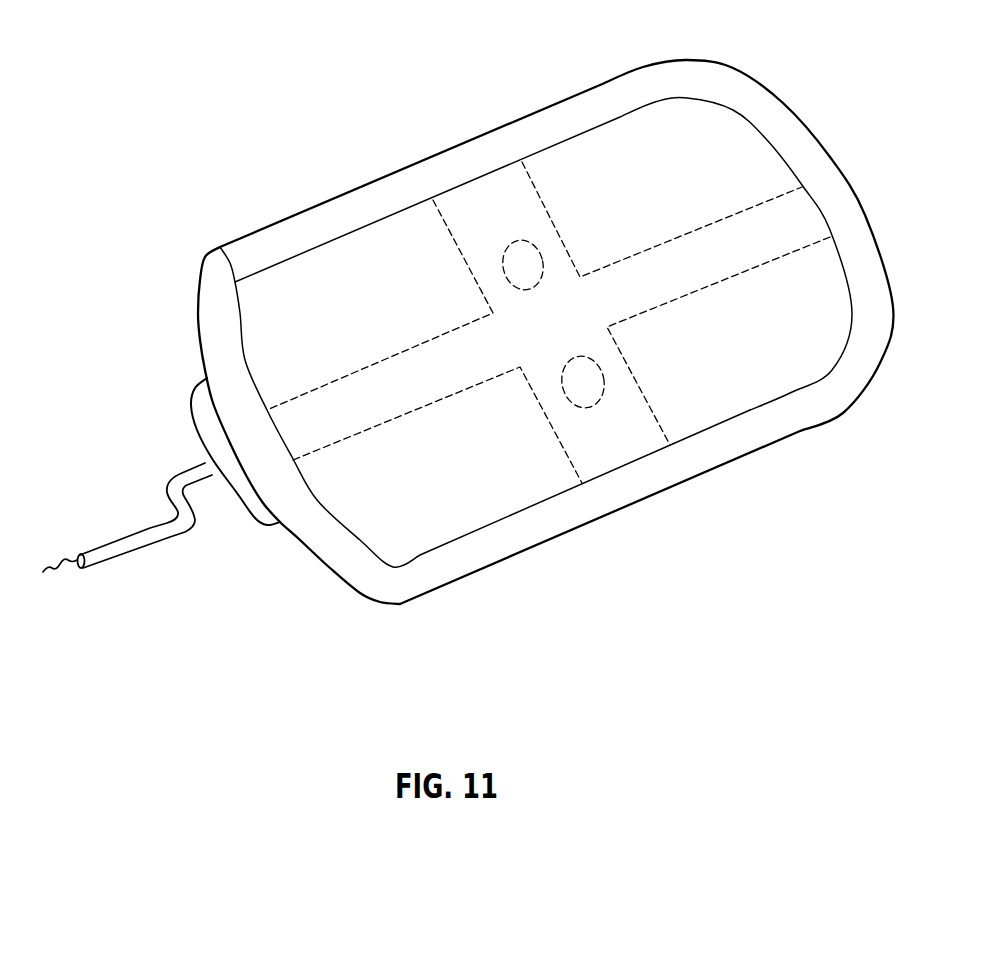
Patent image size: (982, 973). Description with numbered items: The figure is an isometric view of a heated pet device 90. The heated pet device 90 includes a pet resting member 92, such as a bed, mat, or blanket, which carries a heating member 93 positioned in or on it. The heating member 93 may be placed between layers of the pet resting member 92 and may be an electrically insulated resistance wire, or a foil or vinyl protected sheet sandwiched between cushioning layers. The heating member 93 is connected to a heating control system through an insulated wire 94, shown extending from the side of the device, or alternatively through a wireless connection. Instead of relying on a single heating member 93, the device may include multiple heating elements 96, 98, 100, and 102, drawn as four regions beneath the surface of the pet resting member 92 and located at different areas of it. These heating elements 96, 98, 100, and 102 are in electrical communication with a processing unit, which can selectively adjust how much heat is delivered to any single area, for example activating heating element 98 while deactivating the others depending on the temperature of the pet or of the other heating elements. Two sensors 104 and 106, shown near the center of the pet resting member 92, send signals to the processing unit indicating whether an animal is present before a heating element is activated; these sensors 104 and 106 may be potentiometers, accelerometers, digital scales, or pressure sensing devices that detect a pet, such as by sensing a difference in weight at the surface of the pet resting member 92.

The heated pet device 90 is at (150, 94).
The pet resting member 92 is at (567, 100).
The heating member 93 is at (257, 525).
The insulated wire 94 is at (98, 543).
The heating element 96 is at (288, 283).
The heating element 98 is at (705, 135).
The heating element 100 is at (423, 532).
The heating element 102 is at (768, 380).
The sensor 104 is at (522, 252).
The sensor 106 is at (597, 398).